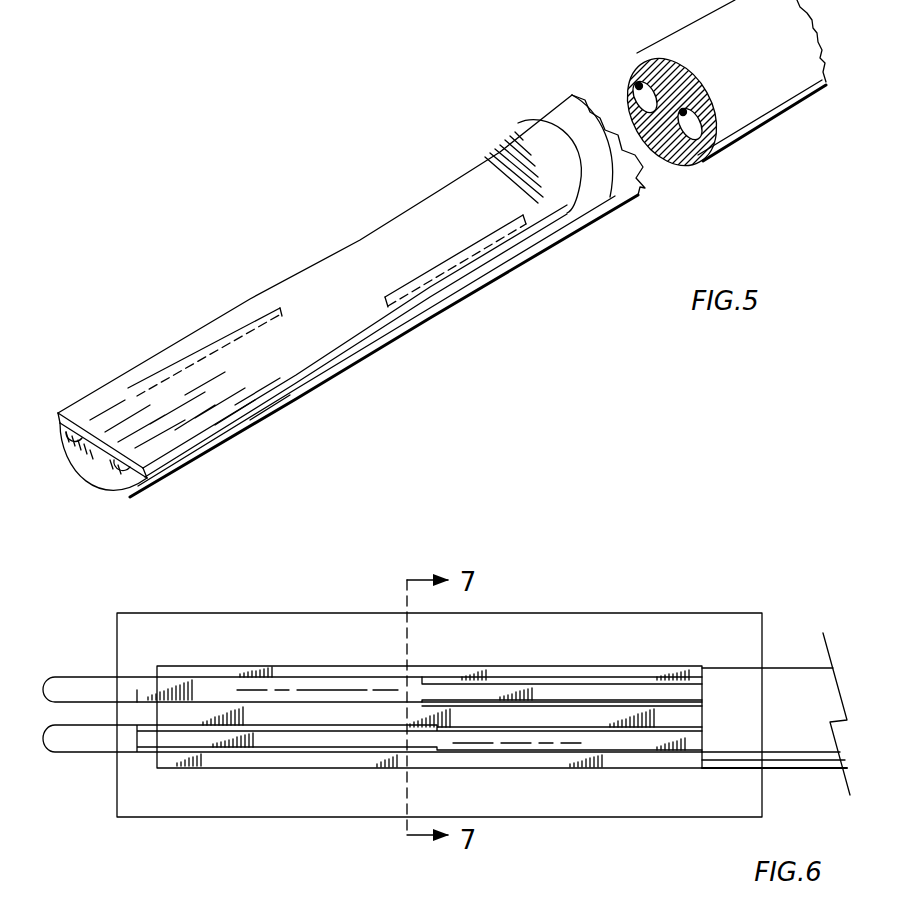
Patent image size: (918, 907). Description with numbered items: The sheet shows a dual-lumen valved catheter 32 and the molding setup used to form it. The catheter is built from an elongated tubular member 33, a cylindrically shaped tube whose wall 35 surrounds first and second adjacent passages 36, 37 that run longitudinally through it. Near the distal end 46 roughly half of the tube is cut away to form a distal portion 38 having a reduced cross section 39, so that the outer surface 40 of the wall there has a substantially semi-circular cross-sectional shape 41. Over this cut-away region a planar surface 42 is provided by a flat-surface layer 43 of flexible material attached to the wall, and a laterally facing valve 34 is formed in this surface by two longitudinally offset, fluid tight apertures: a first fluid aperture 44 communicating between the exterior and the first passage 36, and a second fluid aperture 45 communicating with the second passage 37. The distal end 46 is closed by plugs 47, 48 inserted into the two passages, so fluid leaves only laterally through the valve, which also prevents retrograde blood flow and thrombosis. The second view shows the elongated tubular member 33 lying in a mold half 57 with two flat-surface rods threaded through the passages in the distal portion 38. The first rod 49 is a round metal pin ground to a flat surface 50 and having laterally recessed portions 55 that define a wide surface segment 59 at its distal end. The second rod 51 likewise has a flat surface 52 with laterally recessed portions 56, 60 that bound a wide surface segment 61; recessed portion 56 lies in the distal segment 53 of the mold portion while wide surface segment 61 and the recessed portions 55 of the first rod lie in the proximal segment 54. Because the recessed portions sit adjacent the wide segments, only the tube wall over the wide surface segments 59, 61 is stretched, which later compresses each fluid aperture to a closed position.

In FIG. 5, the valved catheter 32 is at (312, 97).
In FIG. 5, the elongated tubular member 33 is at (740, 143).
In FIG. 6, the elongated tubular member 33 is at (778, 672).
In FIG. 5, the laterally facing valve 34 is at (210, 205).
In FIG. 5, the wall 35 is at (692, 167).
In FIG. 6, the wall 35 is at (610, 672).
In FIG. 5, the first passage 36 is at (627, 98).
In FIG. 6, the first passage 36 is at (640, 680).
In FIG. 5, the second passage 37 is at (672, 167).
In FIG. 5, the distal portion 38 is at (286, 433).
In FIG. 6, the distal portion 38 is at (472, 548).
In FIG. 5, the reduced cross section 39 is at (97, 478).
In FIG. 5, the outer surface 40 is at (210, 447).
In FIG. 5, the semi-circular cross-sectional shape 41 is at (62, 432).
In FIG. 5, the planar surface 42 is at (360, 255).
In FIG. 5, the flat-surface layer 43 is at (345, 355).
In FIG. 5, the first fluid aperture 44 is at (250, 333).
In FIG. 5, the second fluid aperture 45 is at (425, 275).
In FIG. 5, the distal end 46 is at (116, 512).
In FIG. 5, the plug 47 is at (80, 438).
In FIG. 5, the plug 48 is at (125, 462).
In FIG. 6, the first rod 49 is at (57, 677).
In FIG. 6, the flat surface 50 is at (490, 693).
In FIG. 6, the second rod 51 is at (57, 752).
In FIG. 6, the flat surface 52 is at (640, 752).
In FIG. 6, the distal segment 53 is at (315, 800).
In FIG. 6, the proximal segment 54 is at (545, 797).
In FIG. 6, the laterally recessed portions 55 is at (560, 680).
In FIG. 6, the laterally recessed portion 56 is at (340, 750).
In FIG. 6, the mold half 57 is at (720, 625).
In FIG. 6, the wide surface segment 59 is at (350, 677).
In FIG. 6, the laterally recessed portion 60 is at (673, 752).
In FIG. 6, the wide surface segment 61 is at (553, 750).